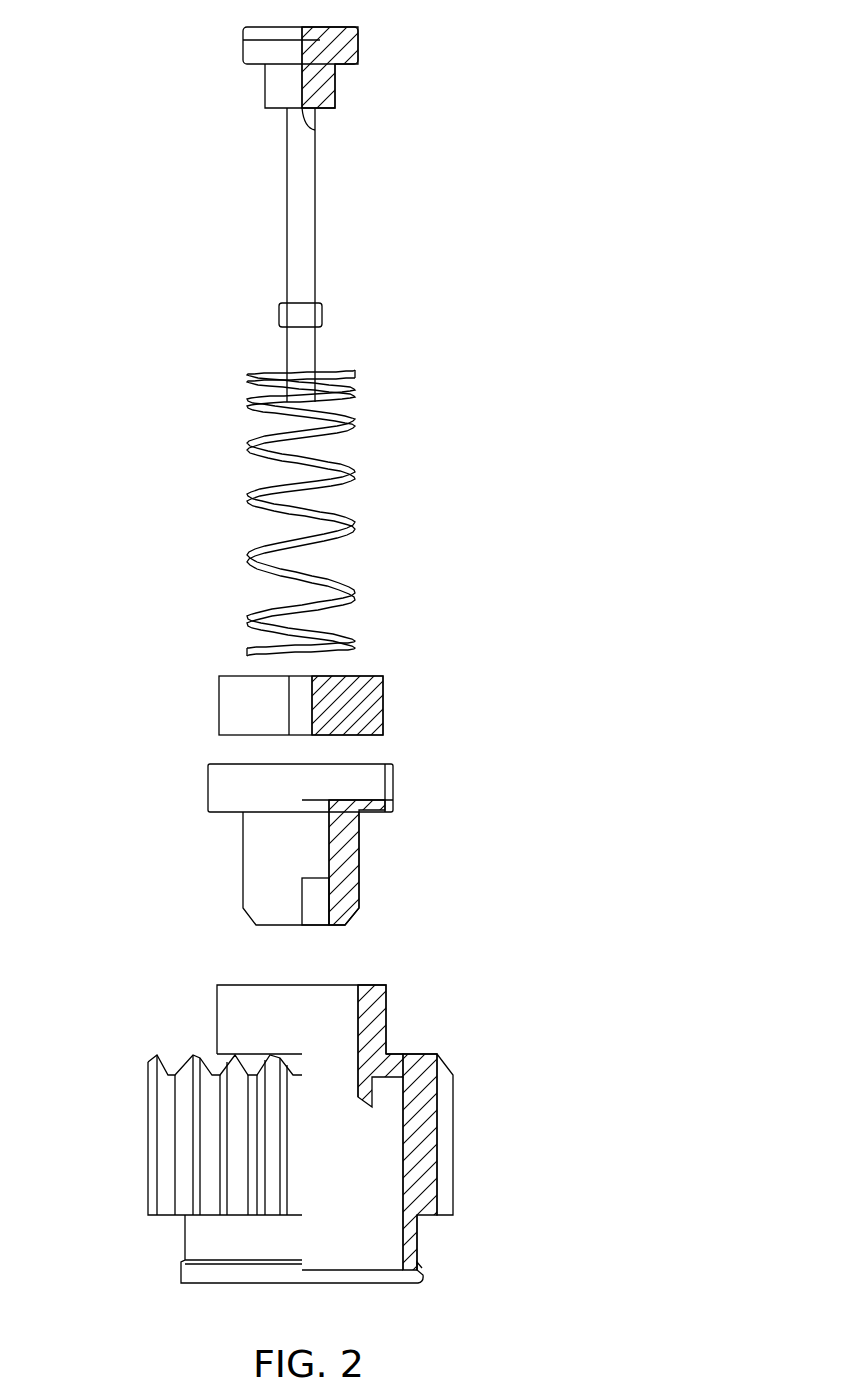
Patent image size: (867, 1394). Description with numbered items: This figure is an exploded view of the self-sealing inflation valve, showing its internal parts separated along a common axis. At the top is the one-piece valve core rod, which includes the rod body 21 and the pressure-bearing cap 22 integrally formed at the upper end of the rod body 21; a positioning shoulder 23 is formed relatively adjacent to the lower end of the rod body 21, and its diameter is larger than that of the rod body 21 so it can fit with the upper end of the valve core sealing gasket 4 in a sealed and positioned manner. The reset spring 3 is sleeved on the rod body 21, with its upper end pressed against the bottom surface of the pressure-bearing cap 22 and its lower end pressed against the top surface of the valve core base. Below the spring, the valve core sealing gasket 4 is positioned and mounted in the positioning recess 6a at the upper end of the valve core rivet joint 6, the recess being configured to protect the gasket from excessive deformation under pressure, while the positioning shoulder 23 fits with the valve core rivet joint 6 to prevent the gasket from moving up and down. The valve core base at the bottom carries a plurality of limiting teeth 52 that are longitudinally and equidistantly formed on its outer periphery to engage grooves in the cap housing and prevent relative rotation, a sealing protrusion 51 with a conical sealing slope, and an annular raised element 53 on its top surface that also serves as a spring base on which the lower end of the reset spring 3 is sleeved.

The pressure-bearing cap 22 is at (420, 33).
The rod body 21 is at (298, 250).
The positioning shoulder 23 is at (402, 290).
The reset spring 3 is at (428, 492).
The valve core sealing gasket 4 is at (440, 668).
The positioning recess 6a is at (440, 770).
The valve core rivet joint 6 is at (440, 892).
The raised element 53 is at (482, 993).
The sealing protrusion 51 is at (492, 1173).
The limiting tooth 52 is at (110, 1222).